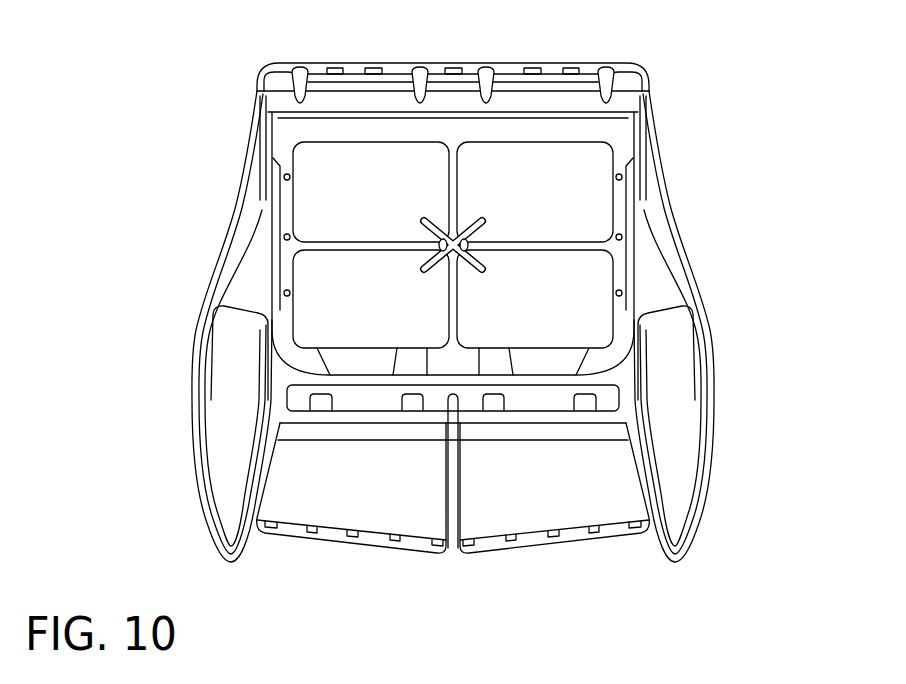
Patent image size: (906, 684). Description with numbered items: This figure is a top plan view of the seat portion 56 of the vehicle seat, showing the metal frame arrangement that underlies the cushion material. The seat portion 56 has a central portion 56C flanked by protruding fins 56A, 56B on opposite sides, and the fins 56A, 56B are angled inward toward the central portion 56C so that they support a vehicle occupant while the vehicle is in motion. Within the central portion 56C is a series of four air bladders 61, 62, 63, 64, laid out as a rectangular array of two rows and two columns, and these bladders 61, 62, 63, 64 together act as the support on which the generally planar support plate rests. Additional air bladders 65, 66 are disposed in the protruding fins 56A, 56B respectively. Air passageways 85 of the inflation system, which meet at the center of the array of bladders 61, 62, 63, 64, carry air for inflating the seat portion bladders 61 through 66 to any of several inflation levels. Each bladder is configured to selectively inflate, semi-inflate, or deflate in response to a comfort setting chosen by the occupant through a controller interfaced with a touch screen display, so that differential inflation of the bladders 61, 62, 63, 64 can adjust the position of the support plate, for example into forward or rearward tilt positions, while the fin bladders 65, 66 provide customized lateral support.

The seat portion 56 is at (675, 160).
The protruding fin 56A is at (248, 252).
The protruding fin 56B is at (667, 275).
The central portion 56C is at (450, 418).
The air bladder 61 is at (563, 320).
The air bladder 62 is at (317, 280).
The air bladder 63 is at (320, 193).
The air bladder 64 is at (565, 202).
The air bladder 65 is at (229, 383).
The air bladder 66 is at (680, 372).
The air passageways 85 is at (433, 225).